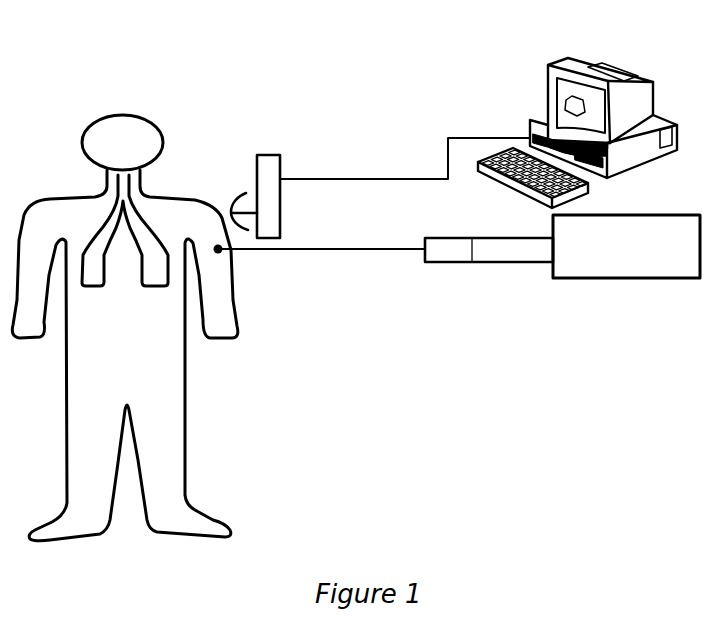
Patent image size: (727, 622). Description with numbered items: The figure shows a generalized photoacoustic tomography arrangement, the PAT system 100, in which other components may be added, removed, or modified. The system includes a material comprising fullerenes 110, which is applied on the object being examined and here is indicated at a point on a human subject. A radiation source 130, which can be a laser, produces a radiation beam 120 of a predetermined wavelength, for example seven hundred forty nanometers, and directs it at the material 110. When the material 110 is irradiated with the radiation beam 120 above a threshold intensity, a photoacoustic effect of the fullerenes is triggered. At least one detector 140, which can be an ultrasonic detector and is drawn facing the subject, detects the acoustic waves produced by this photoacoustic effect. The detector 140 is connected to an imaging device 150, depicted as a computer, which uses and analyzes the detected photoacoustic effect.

The PAT system 100 is at (353, 58).
The material comprising fullerenes 110 is at (201, 224).
The radiation beam 120 is at (254, 252).
The radiation source 130 is at (580, 278).
The detector 140 is at (280, 176).
The imaging device 150 is at (583, 63).